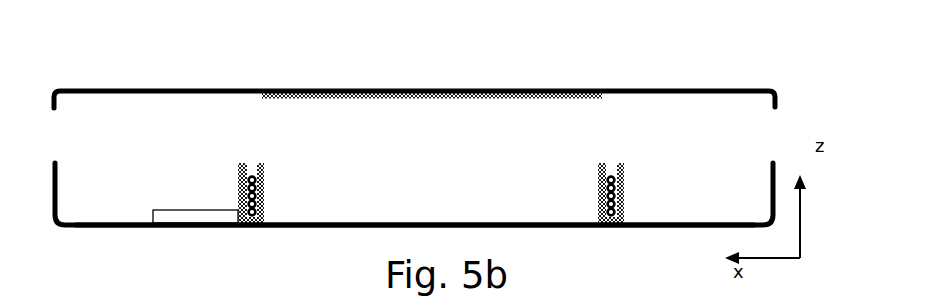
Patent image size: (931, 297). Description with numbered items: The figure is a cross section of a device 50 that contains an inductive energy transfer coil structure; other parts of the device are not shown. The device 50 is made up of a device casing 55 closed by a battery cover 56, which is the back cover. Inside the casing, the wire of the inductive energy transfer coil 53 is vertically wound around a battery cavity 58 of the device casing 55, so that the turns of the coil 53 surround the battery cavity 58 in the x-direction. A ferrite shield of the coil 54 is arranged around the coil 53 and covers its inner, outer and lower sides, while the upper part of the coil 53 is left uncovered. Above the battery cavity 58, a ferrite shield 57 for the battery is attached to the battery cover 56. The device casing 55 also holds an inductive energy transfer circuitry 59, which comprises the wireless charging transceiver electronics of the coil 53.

The device 50 is at (414, 142).
The inductive energy transfer coil 53 is at (260, 180).
The ferrite shield of the coil 54 is at (240, 175).
The device casing 55 is at (727, 222).
The battery cover 56 is at (742, 89).
The ferrite shield for a battery 57 is at (440, 96).
The battery cavity 58 is at (340, 217).
The inductive energy transfer circuitry 59 is at (212, 217).